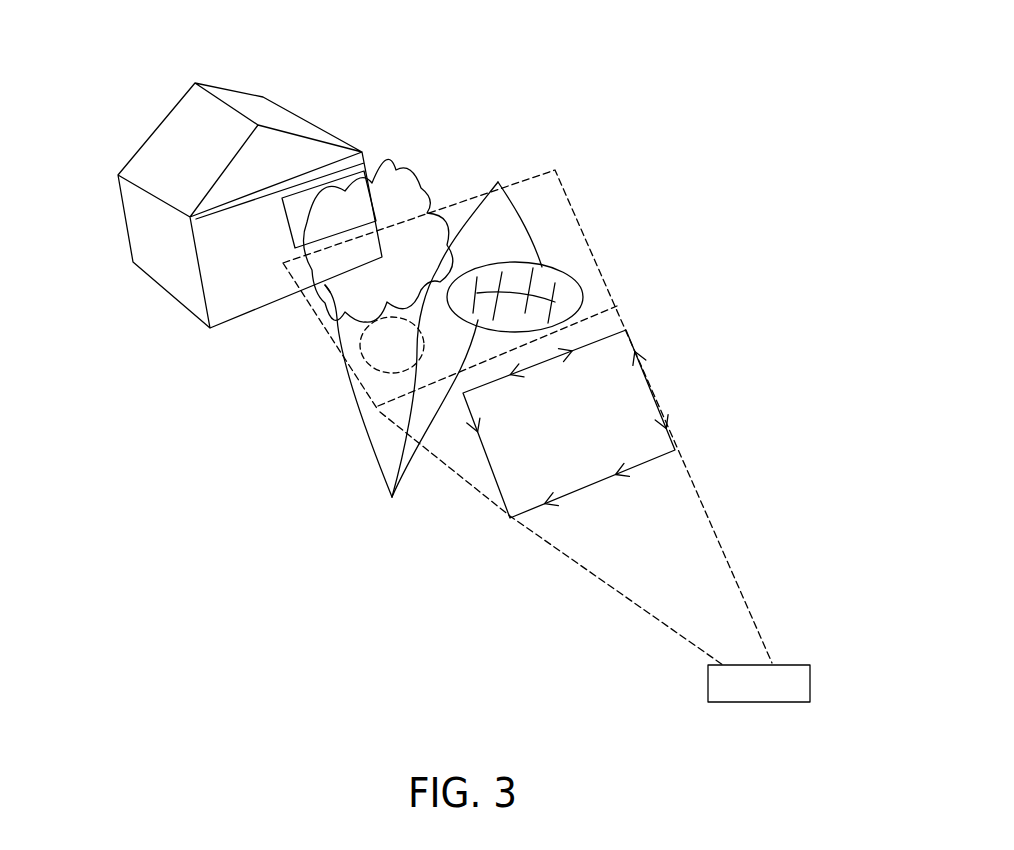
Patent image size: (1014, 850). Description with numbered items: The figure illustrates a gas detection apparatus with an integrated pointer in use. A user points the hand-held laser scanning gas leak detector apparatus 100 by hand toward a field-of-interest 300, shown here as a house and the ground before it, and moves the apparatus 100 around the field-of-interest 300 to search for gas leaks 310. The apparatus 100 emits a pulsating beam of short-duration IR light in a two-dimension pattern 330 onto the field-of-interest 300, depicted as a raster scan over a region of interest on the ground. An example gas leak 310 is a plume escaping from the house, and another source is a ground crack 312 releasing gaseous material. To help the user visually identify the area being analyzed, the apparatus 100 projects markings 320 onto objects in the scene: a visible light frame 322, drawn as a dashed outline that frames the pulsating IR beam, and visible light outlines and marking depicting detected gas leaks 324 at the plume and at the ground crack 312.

The hand-held laser scanning gas leak detector apparatus 100 is at (800, 658).
The field-of-interest 300 is at (152, 62).
The gas leaks 310 is at (398, 163).
The ground crack 312 is at (563, 280).
The markings 320 is at (392, 497).
The visible light frame 322 is at (553, 168).
The visible light outlines and marking depicting detected gas leaks 324 is at (498, 182).
The two-dimension pattern 330 is at (647, 380).